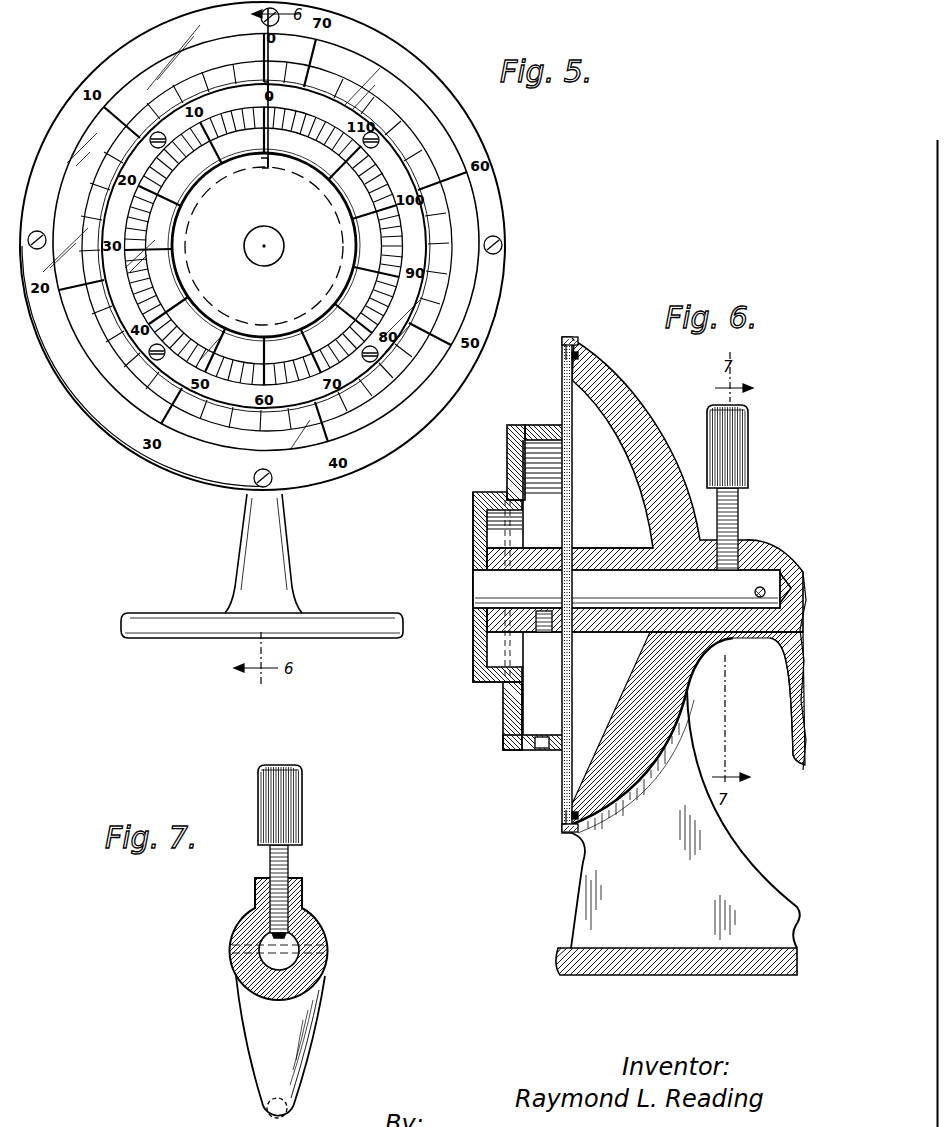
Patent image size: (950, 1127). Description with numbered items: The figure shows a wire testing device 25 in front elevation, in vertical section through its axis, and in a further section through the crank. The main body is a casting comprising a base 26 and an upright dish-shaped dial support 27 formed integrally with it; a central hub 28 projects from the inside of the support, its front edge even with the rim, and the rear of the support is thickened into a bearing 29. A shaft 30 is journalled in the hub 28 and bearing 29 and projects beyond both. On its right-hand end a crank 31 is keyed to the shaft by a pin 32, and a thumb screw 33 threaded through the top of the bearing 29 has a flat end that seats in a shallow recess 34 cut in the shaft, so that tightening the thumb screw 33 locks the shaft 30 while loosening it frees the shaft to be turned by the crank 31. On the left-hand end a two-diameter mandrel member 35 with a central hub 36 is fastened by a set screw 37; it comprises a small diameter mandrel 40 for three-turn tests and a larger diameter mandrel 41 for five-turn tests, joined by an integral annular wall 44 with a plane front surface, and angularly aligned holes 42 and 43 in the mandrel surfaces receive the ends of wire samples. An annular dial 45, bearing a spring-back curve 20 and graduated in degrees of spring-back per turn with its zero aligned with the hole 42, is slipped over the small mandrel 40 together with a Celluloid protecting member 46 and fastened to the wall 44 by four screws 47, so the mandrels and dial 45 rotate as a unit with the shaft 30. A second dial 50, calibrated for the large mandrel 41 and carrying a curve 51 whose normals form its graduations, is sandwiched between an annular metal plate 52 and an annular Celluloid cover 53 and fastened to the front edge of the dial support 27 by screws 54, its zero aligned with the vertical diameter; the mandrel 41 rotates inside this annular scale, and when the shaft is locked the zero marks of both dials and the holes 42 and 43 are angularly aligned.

In FIG. 5, the curve 20 is at (341, 238).
In FIG. 5, the wire testing device 25 is at (506, 179).
In FIG. 6, the wire testing device 25 is at (473, 541).
In FIG. 6, the base 26 is at (745, 856).
In FIG. 6, the dial support 27 is at (654, 432).
In FIG. 6, the central hub 28 is at (608, 548).
In FIG. 6, the bearing 29 is at (728, 646).
In FIG. 5, the shaft 30 is at (262, 236).
In FIG. 6, the shaft 30 is at (473, 590).
In FIG. 7, the shaft 30 is at (318, 932).
In FIG. 6, the crank 31 is at (776, 549).
In FIG. 7, the crank 31 is at (262, 1016).
In FIG. 6, the pin 32 is at (789, 575).
In FIG. 7, the pin 32 is at (322, 960).
In FIG. 6, the thumb screw 33 is at (749, 451).
In FIG. 7, the thumb screw 33 is at (301, 802).
In FIG. 6, the recess 34 is at (761, 586).
In FIG. 7, the recess 34 is at (266, 935).
In FIG. 6, the mandrel member 35 is at (516, 425).
In FIG. 6, the central hub 36 is at (562, 548).
In FIG. 6, the set screw 37 is at (544, 634).
In FIG. 5, the small diameter mandrel 40 is at (347, 292).
In FIG. 6, the small diameter mandrel 40 is at (473, 684).
In FIG. 6, the larger diameter mandrel 41 is at (516, 752).
In FIG. 5, the hole 42 is at (270, 141).
In FIG. 6, the hole 42 is at (490, 494).
In FIG. 5, the hole 43 is at (278, 76).
In FIG. 6, the hole 43 is at (541, 425).
In FIG. 6, the annular wall 44 is at (571, 470).
In FIG. 5, the annular dial 45 is at (410, 148).
In FIG. 6, the annular dial 45 is at (512, 750).
In FIG. 6, the Celluloid protecting member 46 is at (503, 706).
In FIG. 5, the screws 47 is at (386, 122).
In FIG. 5, the dial 50 is at (376, 66).
In FIG. 6, the dial 50 is at (566, 337).
In FIG. 5, the curve 51 is at (406, 390).
In FIG. 6, the annular metal plate 52 is at (574, 343).
In FIG. 6, the annular Celluloid cover 53 is at (562, 349).
In FIG. 5, the screws 54 is at (260, 17).
In FIG. 6, the screws 54 is at (578, 355).